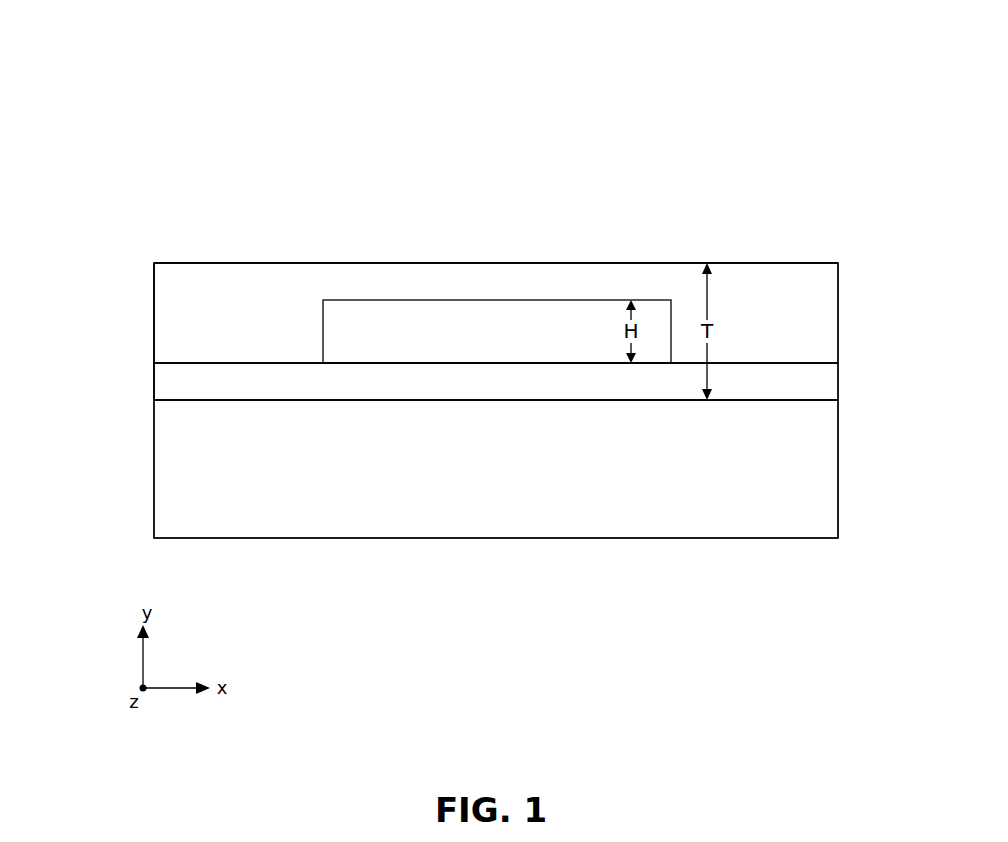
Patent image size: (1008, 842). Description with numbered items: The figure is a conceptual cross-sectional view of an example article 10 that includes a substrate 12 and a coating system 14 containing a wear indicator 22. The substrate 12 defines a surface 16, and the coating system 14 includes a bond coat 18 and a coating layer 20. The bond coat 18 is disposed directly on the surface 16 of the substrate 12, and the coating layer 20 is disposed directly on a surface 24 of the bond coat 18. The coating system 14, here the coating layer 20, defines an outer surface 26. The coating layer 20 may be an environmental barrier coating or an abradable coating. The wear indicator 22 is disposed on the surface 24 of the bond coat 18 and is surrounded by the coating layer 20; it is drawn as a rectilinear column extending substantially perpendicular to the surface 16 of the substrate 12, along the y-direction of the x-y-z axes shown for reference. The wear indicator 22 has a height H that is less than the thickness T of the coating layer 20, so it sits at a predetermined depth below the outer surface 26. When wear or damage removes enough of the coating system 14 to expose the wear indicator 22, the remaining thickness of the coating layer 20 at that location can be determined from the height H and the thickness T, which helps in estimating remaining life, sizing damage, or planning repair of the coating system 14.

The article 10 is at (116, 86).
The substrate 12 is at (173, 490).
The coating system 14 is at (126, 340).
The surface 16 is at (822, 400).
The bond coat 18 is at (173, 384).
The coating layer 20 is at (173, 299).
The wear indicator 22 is at (430, 300).
The surface 24 is at (822, 363).
The outer surface 26 is at (822, 263).